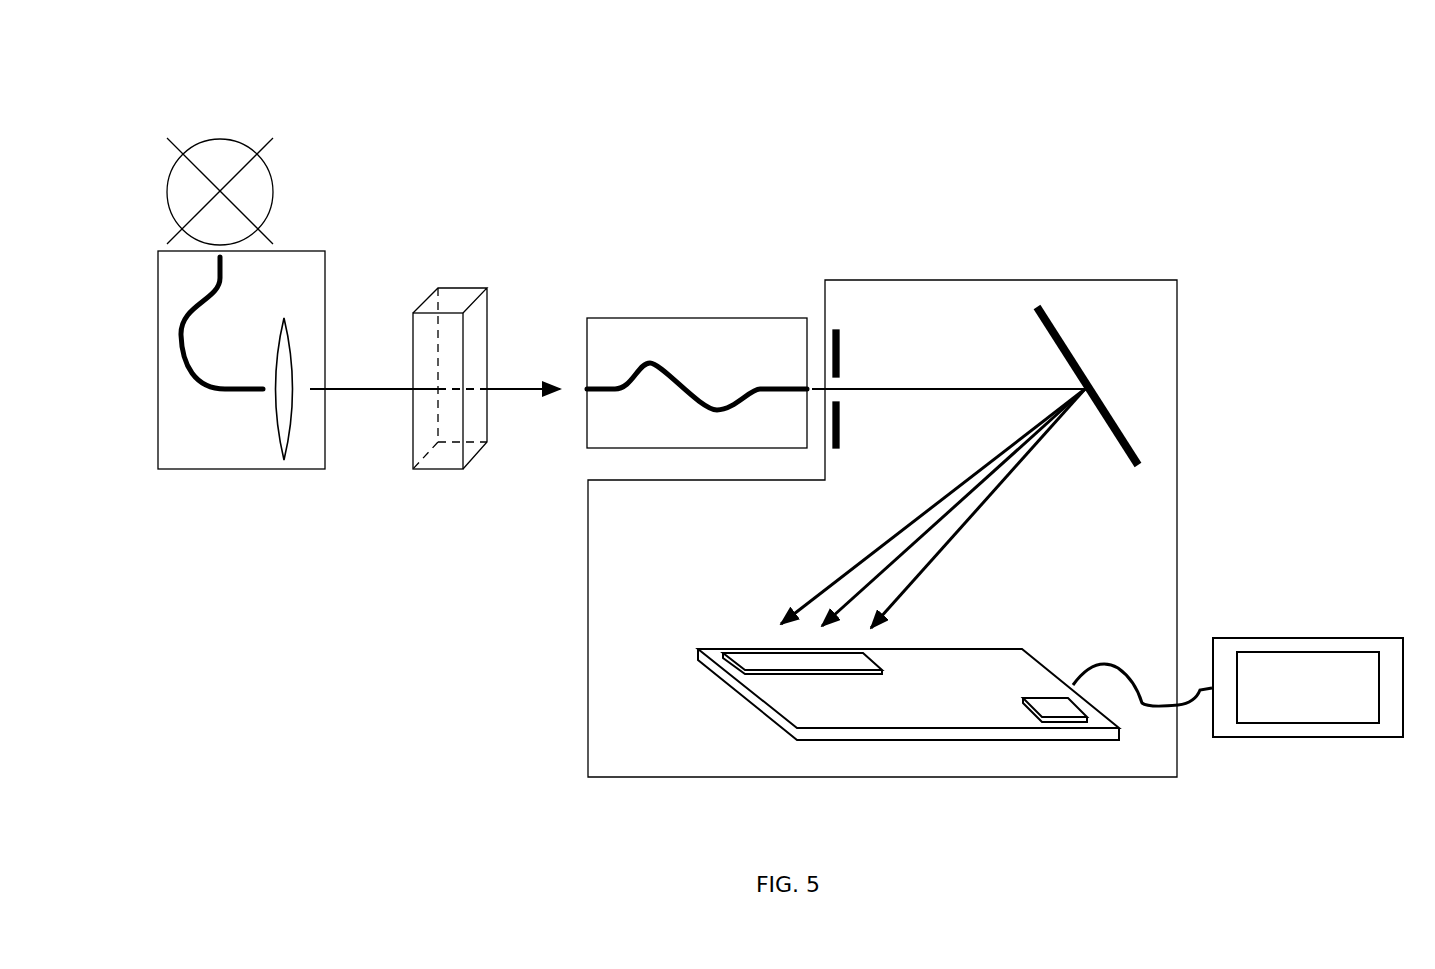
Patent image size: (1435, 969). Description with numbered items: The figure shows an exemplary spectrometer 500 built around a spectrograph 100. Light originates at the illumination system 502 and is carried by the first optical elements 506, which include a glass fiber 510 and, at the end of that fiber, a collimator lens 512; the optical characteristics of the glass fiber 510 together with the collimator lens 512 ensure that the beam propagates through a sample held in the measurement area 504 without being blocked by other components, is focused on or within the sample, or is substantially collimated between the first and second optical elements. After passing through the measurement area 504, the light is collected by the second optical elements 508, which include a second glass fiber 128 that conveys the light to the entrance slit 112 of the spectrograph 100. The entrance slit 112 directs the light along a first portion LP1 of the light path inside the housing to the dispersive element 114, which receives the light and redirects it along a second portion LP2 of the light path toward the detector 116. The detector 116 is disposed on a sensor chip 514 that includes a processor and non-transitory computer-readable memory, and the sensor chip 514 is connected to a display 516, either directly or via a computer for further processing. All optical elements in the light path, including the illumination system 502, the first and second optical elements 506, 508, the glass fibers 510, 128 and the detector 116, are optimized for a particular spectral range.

The spectrometer 500 is at (1270, 107).
The illumination system 502 is at (218, 163).
The measurement area 504 is at (437, 470).
The first optical elements 506 is at (305, 250).
The second optical elements 508 is at (642, 317).
The glass fiber 510 is at (200, 389).
The collimator lens 512 is at (275, 442).
The sensor chip 514 is at (962, 693).
The display 516 is at (1318, 638).
The spectrograph 100 is at (1010, 280).
The entrance slit 112 is at (832, 333).
The dispersive element 114 is at (1127, 433).
The detector 116 is at (778, 657).
The glass fiber 128 is at (667, 370).
The first portion of the light path LP1 is at (958, 389).
The second portion of the light path LP2 is at (1039, 508).